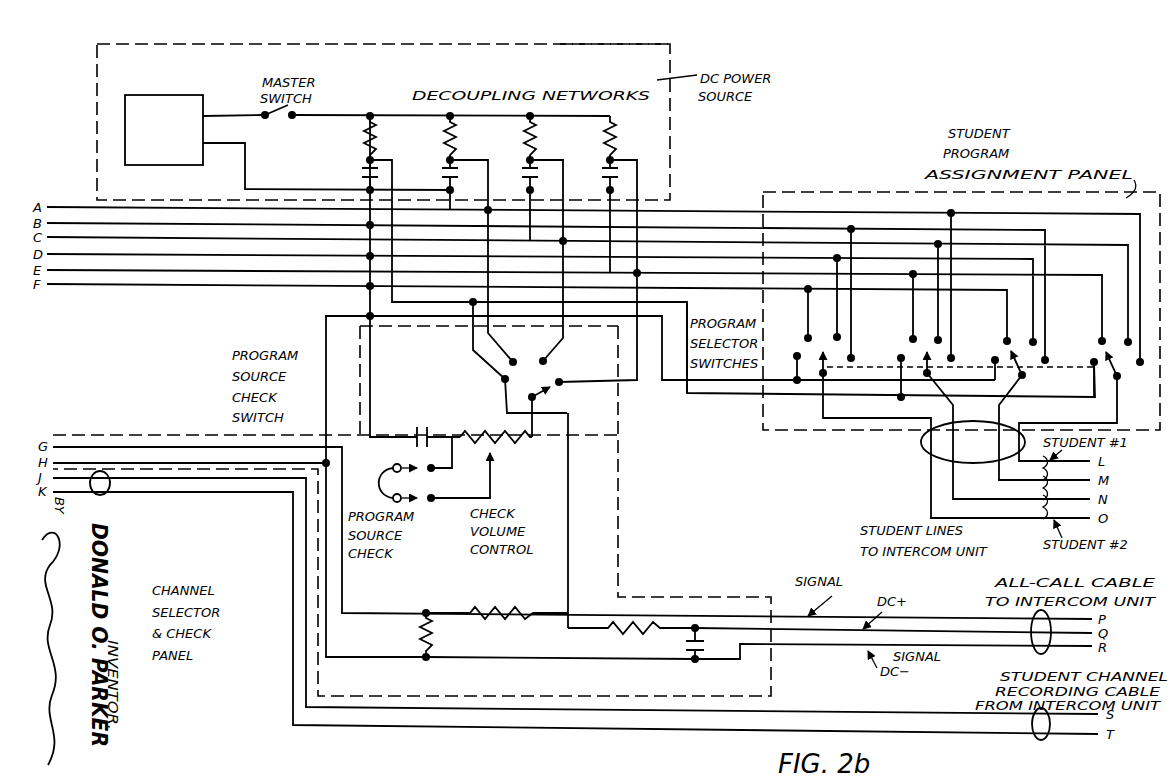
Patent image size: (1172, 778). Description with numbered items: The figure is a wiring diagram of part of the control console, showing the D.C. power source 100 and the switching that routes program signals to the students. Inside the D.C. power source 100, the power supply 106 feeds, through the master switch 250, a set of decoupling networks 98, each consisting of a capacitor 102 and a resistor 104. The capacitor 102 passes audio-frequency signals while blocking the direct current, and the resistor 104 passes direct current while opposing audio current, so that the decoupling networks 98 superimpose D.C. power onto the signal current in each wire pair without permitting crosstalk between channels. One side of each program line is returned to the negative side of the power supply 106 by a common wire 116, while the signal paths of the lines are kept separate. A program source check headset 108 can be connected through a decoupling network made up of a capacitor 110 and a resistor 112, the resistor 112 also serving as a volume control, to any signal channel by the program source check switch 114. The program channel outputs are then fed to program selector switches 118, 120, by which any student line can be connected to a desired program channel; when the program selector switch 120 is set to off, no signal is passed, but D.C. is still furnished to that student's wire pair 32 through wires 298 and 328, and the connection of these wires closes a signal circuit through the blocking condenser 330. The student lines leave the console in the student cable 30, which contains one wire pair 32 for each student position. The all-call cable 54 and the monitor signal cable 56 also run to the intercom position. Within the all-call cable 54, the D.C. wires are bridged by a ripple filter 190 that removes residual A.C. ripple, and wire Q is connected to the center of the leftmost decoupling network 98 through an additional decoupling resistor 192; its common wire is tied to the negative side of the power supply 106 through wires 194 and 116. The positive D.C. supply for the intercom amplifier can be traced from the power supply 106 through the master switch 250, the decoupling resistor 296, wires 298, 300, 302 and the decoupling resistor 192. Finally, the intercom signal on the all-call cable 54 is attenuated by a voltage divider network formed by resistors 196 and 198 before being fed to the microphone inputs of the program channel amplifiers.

The decoupling network 98 is at (499, 55).
The D.C. power source 100 is at (602, 58).
The power supply 106 is at (188, 95).
The master switch 250 is at (289, 120).
The decoupling resistor 296 is at (377, 132).
The resistor 104 is at (455, 141).
The blocking condenser 330 is at (362, 173).
The capacitor 102 is at (444, 173).
The wire 298 is at (395, 190).
The common wire 116 is at (366, 299).
The wire 194 is at (322, 318).
The wire 300 is at (492, 353).
The program source check switch 114 is at (547, 391).
The decoupling network capacitor 110 is at (424, 414).
The resistor 112 is at (507, 431).
The program source check headset 108 is at (380, 488).
The wire 302 is at (576, 518).
The wire 328 is at (662, 372).
The program selector switch 118 is at (871, 366).
The program selector switch 120 is at (1064, 367).
The student cable 30 is at (979, 463).
The wire pair 32 is at (1064, 487).
The monitor signal cable 56 is at (104, 495).
The all-call cable 54 is at (1033, 652).
The decoupling resistor 192 is at (628, 627).
The ripple filter 190 is at (684, 647).
The resistor 196 is at (432, 640).
The resistor 198 is at (511, 622).